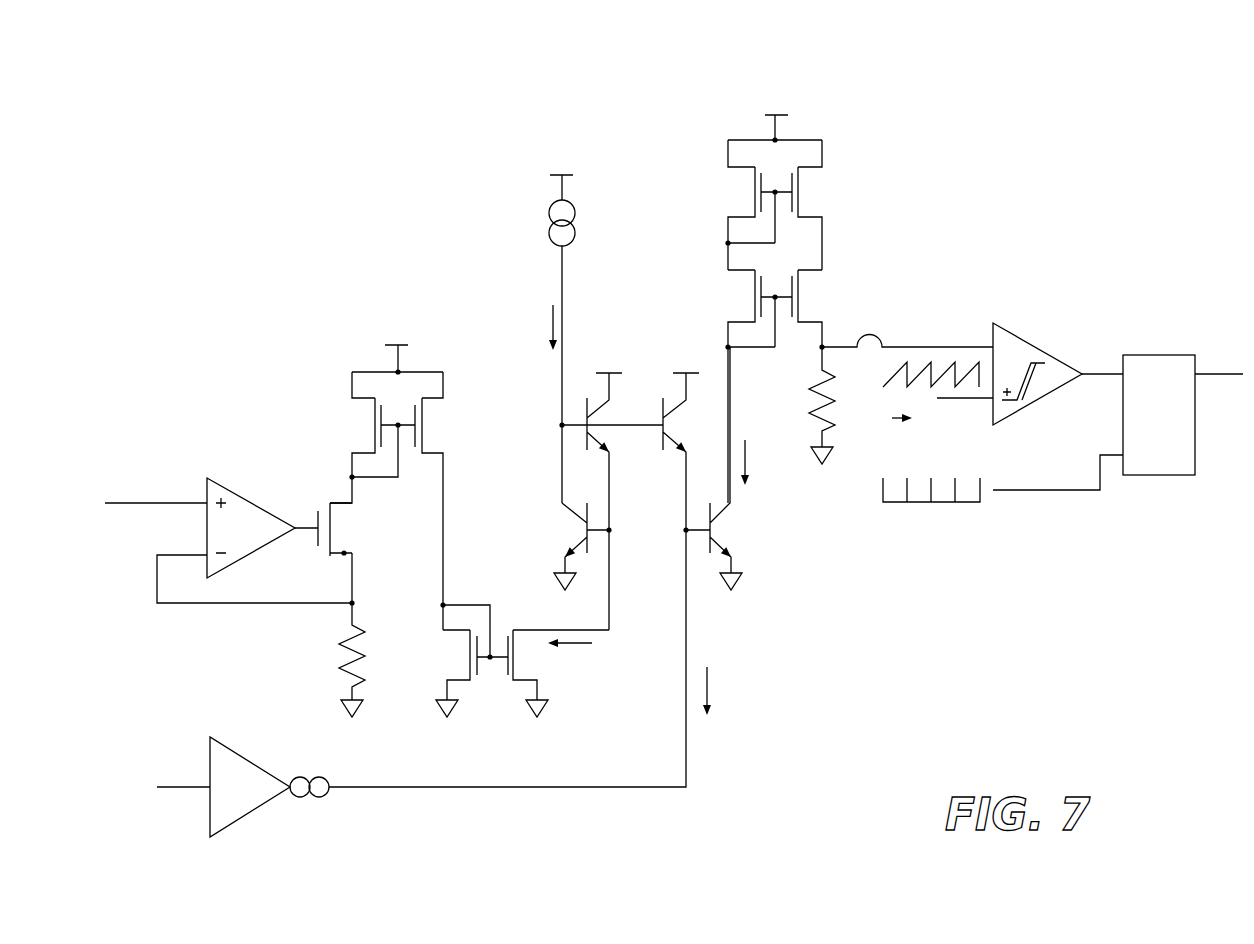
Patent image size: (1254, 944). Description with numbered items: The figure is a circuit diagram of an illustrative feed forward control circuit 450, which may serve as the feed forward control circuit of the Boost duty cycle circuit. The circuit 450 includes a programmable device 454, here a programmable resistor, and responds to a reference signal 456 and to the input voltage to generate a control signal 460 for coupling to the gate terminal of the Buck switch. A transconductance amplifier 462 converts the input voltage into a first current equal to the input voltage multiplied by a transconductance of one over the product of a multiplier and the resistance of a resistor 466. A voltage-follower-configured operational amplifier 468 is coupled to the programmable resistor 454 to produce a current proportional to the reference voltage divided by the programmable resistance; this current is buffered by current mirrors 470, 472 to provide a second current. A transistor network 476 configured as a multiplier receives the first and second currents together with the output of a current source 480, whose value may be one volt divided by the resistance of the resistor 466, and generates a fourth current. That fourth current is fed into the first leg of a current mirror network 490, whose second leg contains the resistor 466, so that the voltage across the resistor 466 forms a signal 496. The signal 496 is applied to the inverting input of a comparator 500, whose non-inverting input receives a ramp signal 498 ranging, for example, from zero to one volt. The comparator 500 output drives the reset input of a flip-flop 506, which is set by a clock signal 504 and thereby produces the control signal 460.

The feed forward control circuit 450 is at (424, 130).
The programmable device 454 is at (348, 684).
The reference signal 456 is at (137, 501).
The control signal 460 is at (1224, 372).
The transconductance amplifier 462 is at (247, 752).
The resistor 466 is at (808, 387).
The operational amplifier 468 is at (266, 508).
The current mirror 470 is at (338, 421).
The current mirror 472 is at (432, 657).
The transistor network 476 is at (548, 567).
The current source 480 is at (575, 222).
The current mirror network 490 is at (834, 184).
The signal 496 is at (962, 346).
The ramp signal 498 is at (954, 400).
The comparator 500 is at (1050, 347).
The clock signal 504 is at (1032, 490).
The flip-flop 506 is at (1159, 415).